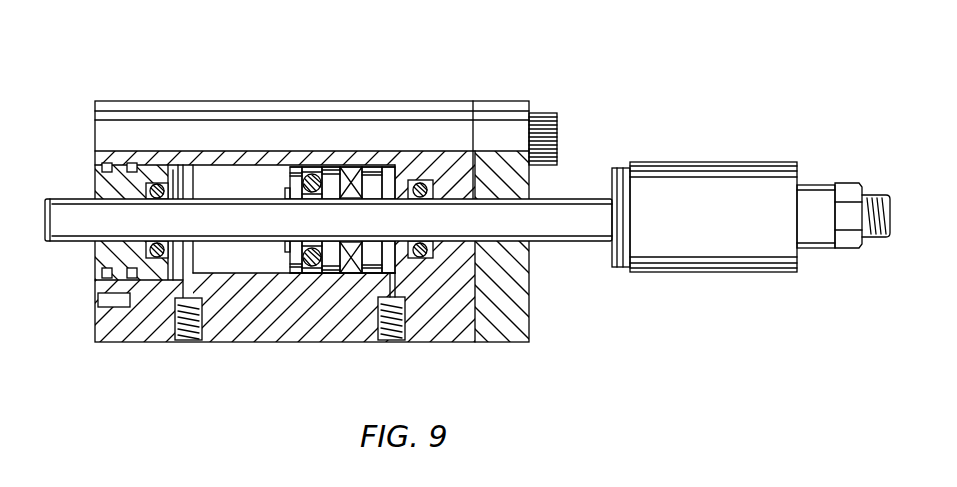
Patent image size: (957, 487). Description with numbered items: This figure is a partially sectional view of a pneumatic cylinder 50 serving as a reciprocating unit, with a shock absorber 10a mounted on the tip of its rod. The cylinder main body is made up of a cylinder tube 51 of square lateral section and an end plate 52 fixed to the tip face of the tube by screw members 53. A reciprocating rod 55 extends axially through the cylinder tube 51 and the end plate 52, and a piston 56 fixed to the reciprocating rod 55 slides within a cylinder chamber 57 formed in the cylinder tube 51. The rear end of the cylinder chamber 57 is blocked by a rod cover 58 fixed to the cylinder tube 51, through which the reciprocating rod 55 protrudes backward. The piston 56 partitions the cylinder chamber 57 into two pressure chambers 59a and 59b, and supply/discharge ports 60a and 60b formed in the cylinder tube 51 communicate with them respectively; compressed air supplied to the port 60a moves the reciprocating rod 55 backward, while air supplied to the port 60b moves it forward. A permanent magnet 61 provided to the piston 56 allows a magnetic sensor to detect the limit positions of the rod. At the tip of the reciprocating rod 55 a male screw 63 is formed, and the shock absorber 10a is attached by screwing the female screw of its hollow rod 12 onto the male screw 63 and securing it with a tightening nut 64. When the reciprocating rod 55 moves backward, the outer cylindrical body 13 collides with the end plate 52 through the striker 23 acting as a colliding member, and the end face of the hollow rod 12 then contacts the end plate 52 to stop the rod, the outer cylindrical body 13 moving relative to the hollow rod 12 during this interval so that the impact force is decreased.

The pneumatic cylinder 50 is at (560, 73).
The screw members 53 is at (559, 118).
The rod cover 58 is at (96, 250).
The cylinder chamber 57 is at (257, 262).
The pressure chamber 59a is at (407, 165).
The pressure chamber 59b is at (223, 178).
The cylinder tube 51 is at (437, 333).
The end plate 52 is at (507, 333).
The supply/discharge port 60a is at (387, 342).
The supply/discharge port 60b is at (183, 342).
The piston 56 is at (333, 173).
The permanent magnet 61 is at (348, 178).
The reciprocating rod 55 is at (572, 232).
The striker 23 is at (620, 178).
The shock absorber 10a is at (756, 149).
The outer cylindrical body 13 is at (713, 263).
The hollow rod 12 is at (817, 237).
The tightening nut 64 is at (850, 192).
The male screw 63 is at (872, 238).